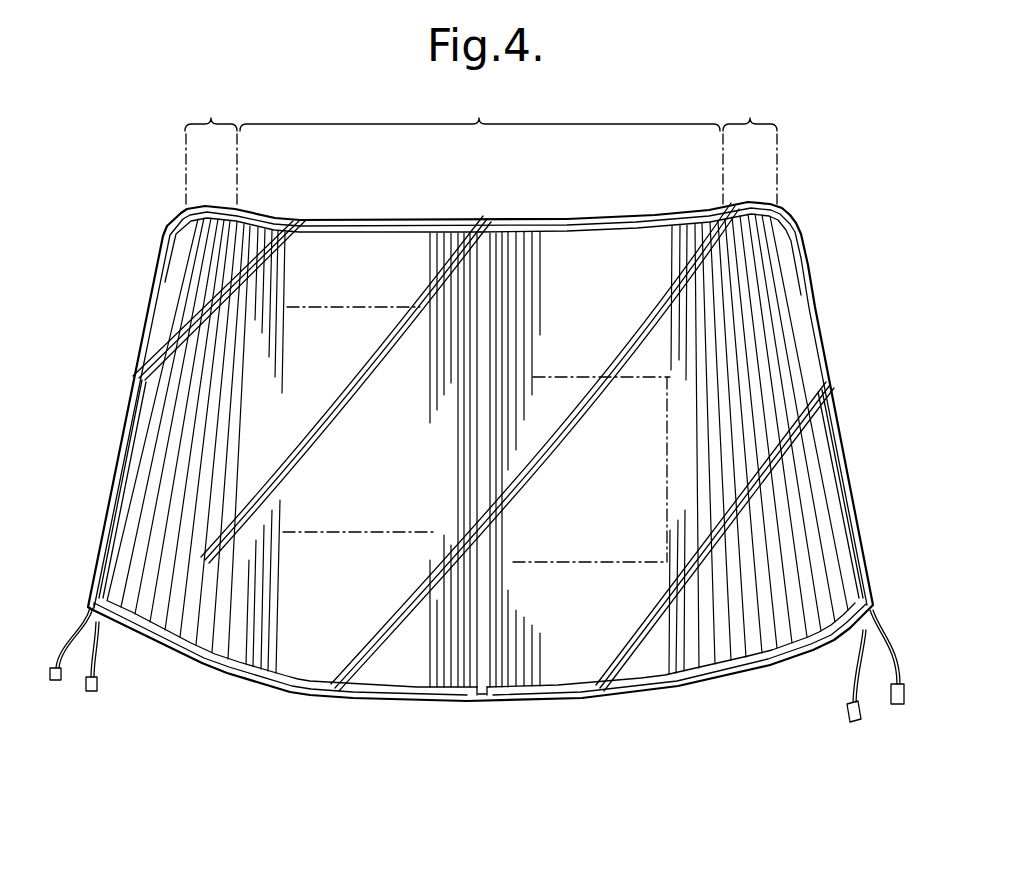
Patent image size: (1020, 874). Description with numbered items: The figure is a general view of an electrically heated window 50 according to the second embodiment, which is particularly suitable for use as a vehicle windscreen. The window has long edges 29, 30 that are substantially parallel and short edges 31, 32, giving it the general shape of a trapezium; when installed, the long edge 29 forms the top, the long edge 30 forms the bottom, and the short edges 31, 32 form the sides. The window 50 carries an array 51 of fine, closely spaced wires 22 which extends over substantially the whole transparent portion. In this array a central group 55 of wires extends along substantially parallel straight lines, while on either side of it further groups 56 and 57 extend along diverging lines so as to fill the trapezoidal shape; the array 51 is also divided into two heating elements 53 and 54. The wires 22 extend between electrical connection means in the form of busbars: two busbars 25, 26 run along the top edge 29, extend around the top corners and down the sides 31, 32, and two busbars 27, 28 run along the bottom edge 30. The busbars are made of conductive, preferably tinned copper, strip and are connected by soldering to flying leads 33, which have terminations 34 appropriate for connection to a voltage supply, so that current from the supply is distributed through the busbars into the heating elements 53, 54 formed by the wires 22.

The wires 22 is at (190, 253).
The top busbar 25 is at (338, 227).
The top busbar 26 is at (620, 227).
The bottom busbar 27 is at (362, 694).
The bottom busbar 28 is at (660, 688).
The long edge 29 is at (405, 220).
The long edge 30 is at (537, 702).
The short edge 31 is at (134, 378).
The short edge 32 is at (834, 364).
The flying leads 33 is at (86, 618).
The terminations 34 is at (94, 692).
The window 50 is at (497, 206).
The array 51 is at (498, 507).
The heating element 53 is at (386, 443).
The heating element 54 is at (609, 478).
The central group of wires 55 is at (480, 148).
The group of wires 56 is at (211, 148).
The group of wires 57 is at (750, 146).